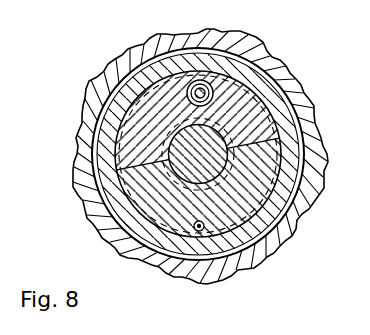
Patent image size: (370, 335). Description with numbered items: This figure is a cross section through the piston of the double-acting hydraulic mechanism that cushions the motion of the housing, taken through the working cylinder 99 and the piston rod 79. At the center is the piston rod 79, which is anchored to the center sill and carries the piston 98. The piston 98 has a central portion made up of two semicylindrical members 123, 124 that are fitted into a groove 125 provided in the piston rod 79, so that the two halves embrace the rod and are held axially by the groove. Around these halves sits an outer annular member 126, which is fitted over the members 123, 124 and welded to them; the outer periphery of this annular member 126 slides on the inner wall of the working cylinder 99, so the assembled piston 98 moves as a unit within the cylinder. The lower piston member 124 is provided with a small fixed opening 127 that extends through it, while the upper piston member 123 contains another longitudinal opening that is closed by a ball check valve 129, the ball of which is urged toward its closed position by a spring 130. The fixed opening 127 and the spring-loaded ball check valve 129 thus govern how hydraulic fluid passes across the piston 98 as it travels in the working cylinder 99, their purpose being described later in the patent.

The piston rod 79 is at (228, 150).
The piston 98 is at (292, 124).
The working cylinder 99 is at (300, 85).
The semicylindrical member 123 is at (130, 115).
The semicylindrical member 124 is at (143, 212).
The groove 125 is at (301, 217).
The outer annular member 126 is at (247, 246).
The small fixed opening 127 is at (198, 232).
The ball check valve 129 is at (260, 48).
The spring 130 is at (187, 93).